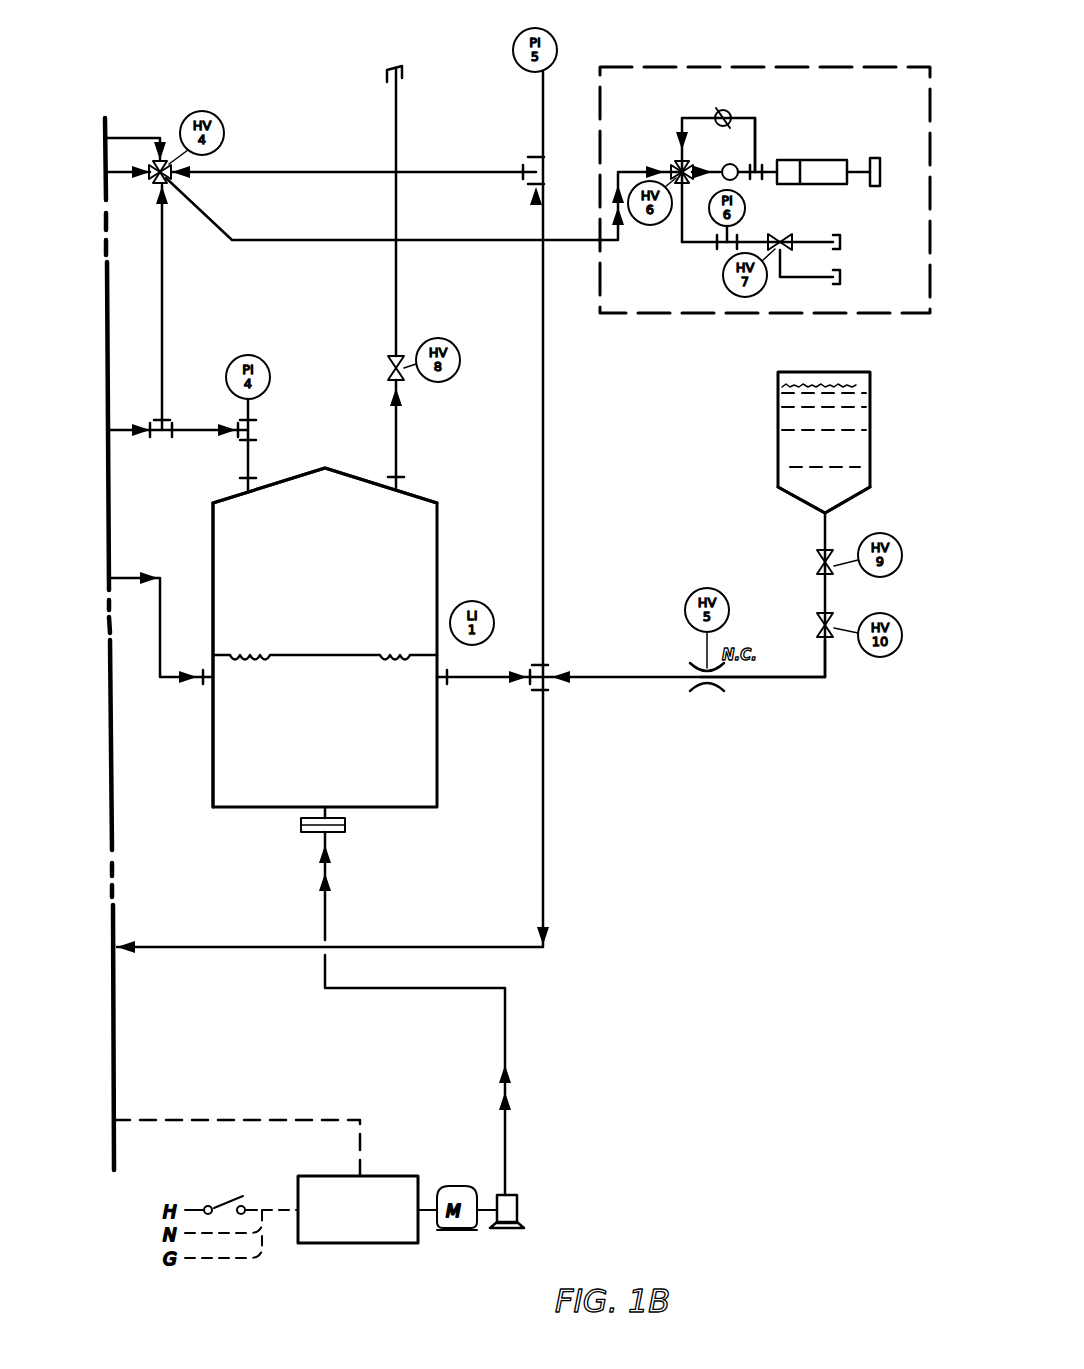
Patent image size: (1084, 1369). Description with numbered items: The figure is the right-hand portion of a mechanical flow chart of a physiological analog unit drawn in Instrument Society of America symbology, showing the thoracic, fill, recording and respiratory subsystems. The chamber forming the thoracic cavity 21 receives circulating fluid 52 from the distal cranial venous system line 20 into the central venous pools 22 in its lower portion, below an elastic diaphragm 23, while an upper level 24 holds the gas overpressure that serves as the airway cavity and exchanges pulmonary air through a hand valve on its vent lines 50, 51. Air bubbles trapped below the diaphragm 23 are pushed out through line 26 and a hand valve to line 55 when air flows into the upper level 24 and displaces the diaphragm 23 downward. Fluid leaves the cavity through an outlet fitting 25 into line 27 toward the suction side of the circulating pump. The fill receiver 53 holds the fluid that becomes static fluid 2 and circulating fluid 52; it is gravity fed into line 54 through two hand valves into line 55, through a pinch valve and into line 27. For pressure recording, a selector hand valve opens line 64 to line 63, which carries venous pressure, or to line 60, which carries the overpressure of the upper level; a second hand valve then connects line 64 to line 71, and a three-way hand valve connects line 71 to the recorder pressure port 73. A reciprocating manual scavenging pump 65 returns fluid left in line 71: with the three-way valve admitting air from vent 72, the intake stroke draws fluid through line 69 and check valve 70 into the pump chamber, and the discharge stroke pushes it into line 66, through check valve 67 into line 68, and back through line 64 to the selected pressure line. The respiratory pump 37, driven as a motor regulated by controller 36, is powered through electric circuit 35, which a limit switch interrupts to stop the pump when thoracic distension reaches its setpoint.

The static fluid 2 is at (791, 444).
The distal cranial venous system line 20 is at (168, 626).
The thoracic cavity 21 is at (213, 762).
The central venous pools 22 is at (437, 717).
The elastic diaphragm 23 is at (328, 657).
The upper level of thoracic cavity 24 is at (224, 529).
The outlet filter 25 is at (345, 832).
The line 26 is at (508, 676).
The line 27 is at (431, 944).
The electric circuit 35 is at (229, 1117).
The regulator 36 is at (320, 1174).
The respiratory pump 37 is at (518, 1195).
The vent line 50 is at (408, 444).
The vent line 51 is at (400, 203).
The circulating fluid 52 is at (338, 763).
The fill receiver 53 is at (862, 493).
The line 54 is at (825, 533).
The line 55 is at (832, 680).
The line 60 is at (164, 307).
The line 63 is at (275, 172).
The line 64 is at (283, 240).
The scavenging pump 65 is at (815, 158).
The line 66 is at (757, 150).
The check valve 67 is at (731, 111).
The line 68 is at (684, 116).
The line 69 is at (700, 188).
The check valve 70 is at (733, 159).
The line 71 is at (688, 246).
The vent 72 is at (846, 277).
The recorder pressure port 73 is at (846, 239).